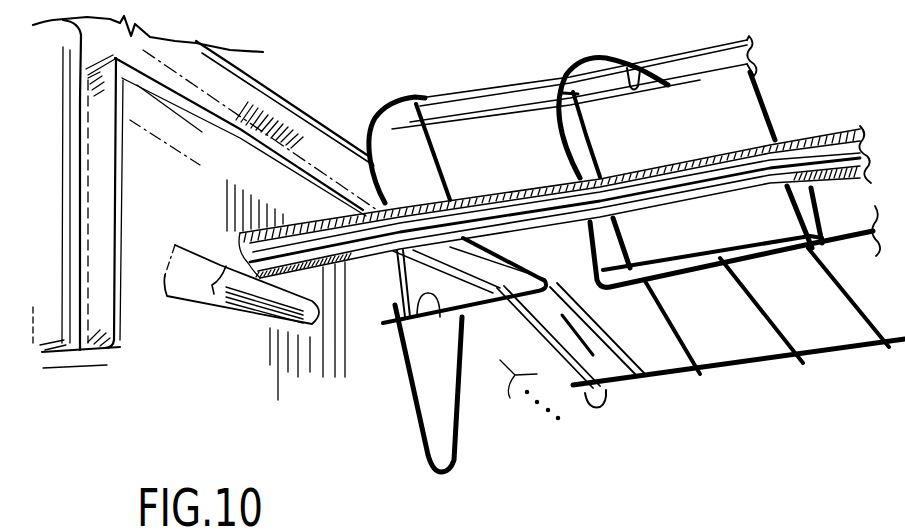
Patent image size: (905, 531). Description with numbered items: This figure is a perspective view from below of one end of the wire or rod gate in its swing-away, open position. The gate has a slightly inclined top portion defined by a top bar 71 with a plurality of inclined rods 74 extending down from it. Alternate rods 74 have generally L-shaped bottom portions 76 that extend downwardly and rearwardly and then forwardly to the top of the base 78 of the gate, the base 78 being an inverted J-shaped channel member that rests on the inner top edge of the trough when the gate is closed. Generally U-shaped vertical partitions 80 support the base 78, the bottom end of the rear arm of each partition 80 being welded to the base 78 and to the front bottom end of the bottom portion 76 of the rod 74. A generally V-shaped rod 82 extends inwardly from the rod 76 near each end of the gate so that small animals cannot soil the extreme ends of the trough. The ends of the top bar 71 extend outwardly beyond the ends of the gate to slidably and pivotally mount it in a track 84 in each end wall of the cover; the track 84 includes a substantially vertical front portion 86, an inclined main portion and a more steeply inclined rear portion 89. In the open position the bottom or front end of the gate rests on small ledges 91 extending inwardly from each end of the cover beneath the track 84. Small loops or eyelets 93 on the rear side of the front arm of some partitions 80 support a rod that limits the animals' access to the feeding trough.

The top bar 71 is at (772, 363).
The inclined rods 74 is at (620, 356).
The L-shaped bottom portions 76 is at (400, 345).
The base 78 is at (366, 216).
The U-shaped vertical partitions 80 is at (555, 128).
The V-shaped rod 82 is at (427, 460).
The track 84 is at (215, 133).
The front portion 86 is at (121, 313).
The rear portion 89 is at (521, 402).
The ledges 91 is at (268, 293).
The loops or eyelets 93 is at (640, 94).